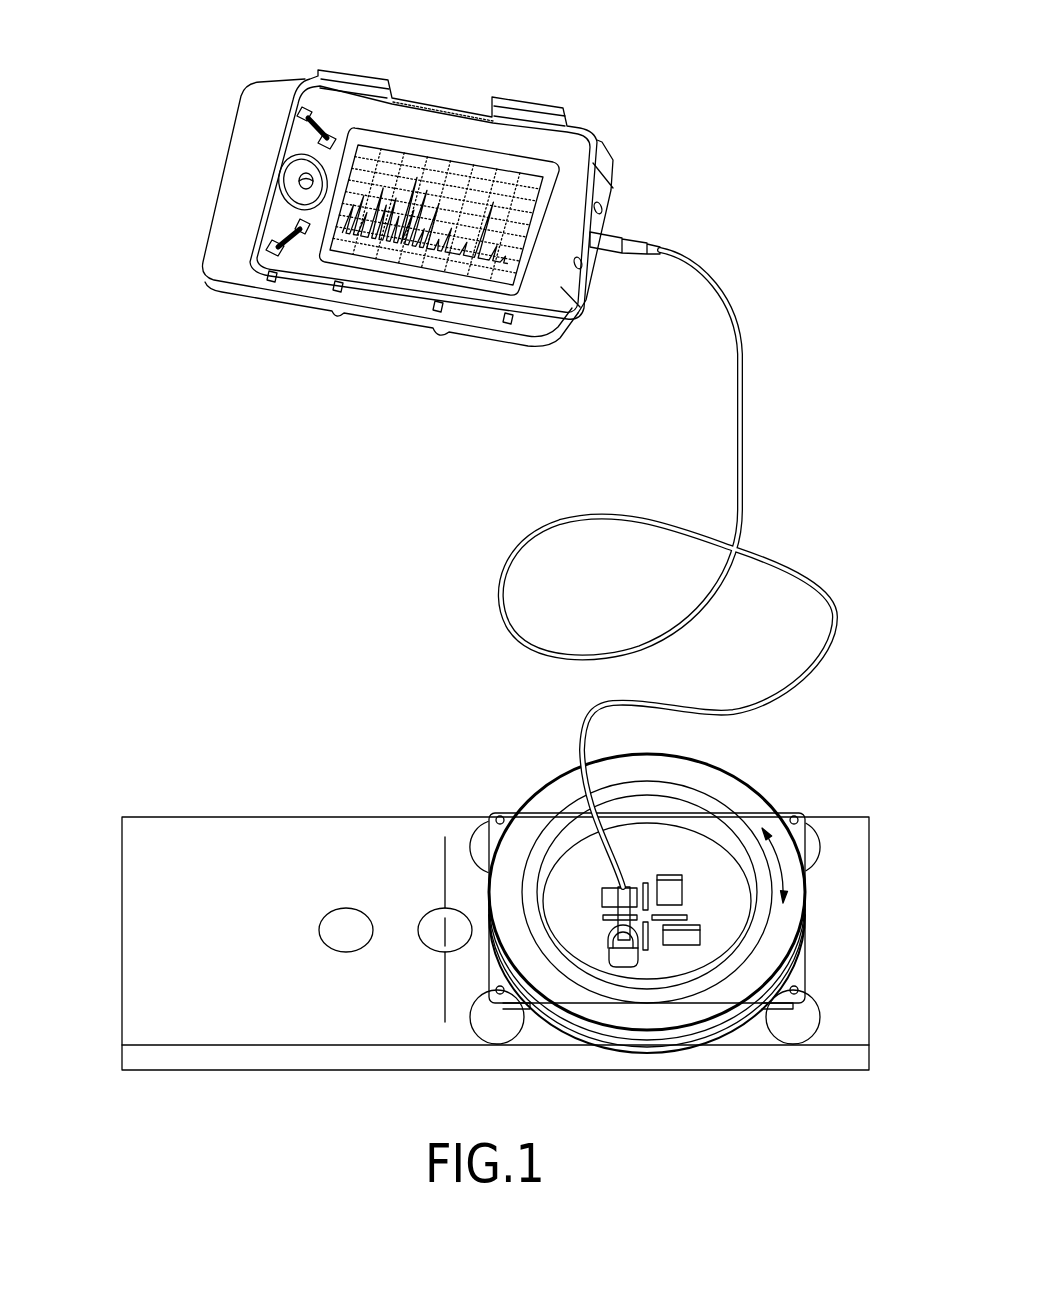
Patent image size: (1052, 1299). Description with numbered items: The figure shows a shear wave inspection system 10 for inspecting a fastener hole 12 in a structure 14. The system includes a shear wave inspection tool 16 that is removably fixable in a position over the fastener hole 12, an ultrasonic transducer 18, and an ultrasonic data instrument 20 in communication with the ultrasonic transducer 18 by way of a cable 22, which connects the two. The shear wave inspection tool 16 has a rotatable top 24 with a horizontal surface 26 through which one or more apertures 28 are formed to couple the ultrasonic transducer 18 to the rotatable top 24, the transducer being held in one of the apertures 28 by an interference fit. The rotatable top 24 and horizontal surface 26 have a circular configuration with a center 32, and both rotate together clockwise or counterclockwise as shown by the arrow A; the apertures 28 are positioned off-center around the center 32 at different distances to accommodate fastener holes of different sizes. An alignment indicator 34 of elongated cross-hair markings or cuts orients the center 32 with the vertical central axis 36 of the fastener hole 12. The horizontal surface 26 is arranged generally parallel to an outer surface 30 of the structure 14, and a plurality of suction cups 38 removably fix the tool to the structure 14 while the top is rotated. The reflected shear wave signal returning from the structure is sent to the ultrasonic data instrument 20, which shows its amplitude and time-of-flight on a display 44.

The shear wave inspection system 10 is at (307, 410).
The fastener hole 12 is at (437, 942).
The structure 14 is at (145, 852).
The shear wave inspection tool 16 is at (805, 903).
The ultrasonic transducer 18 is at (620, 957).
The ultrasonic data instrument 20 is at (259, 105).
The cable 22 is at (692, 262).
The rotatable top 24 is at (737, 797).
The horizontal surface 26 is at (594, 904).
The apertures 28 is at (675, 893).
The outer surface 30 is at (217, 935).
The center 32 is at (647, 920).
The alignment indicator 34 is at (643, 877).
The vertical central axis 36 is at (445, 880).
The suction cups 38 is at (805, 1017).
The display 44 is at (380, 168).
The arrow A is at (782, 868).